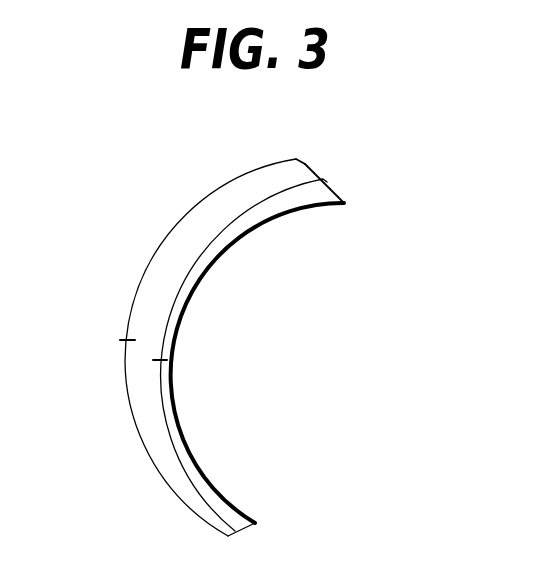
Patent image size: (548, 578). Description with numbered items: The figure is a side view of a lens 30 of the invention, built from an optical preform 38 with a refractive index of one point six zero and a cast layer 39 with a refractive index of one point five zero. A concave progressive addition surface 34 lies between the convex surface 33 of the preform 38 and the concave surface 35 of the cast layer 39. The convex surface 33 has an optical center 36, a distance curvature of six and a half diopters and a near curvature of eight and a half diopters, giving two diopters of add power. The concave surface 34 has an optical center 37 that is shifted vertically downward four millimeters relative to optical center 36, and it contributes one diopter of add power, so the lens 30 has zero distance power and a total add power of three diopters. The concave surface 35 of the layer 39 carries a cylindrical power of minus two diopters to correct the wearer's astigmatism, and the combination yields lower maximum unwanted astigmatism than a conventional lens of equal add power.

The lens 30 is at (306, 156).
The convex surface 33 is at (215, 188).
The concave progressive addition surface 34 is at (237, 217).
The concave surface 35 is at (186, 442).
The optical center 36 is at (118, 345).
The optical center 37 is at (155, 369).
The optical preform 38 is at (305, 165).
The cast layer 39 is at (337, 197).